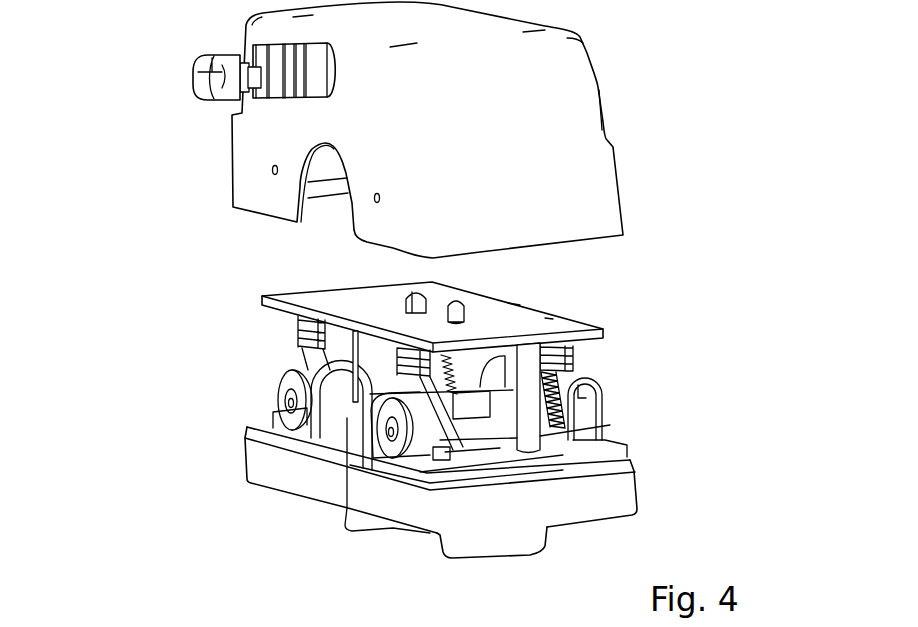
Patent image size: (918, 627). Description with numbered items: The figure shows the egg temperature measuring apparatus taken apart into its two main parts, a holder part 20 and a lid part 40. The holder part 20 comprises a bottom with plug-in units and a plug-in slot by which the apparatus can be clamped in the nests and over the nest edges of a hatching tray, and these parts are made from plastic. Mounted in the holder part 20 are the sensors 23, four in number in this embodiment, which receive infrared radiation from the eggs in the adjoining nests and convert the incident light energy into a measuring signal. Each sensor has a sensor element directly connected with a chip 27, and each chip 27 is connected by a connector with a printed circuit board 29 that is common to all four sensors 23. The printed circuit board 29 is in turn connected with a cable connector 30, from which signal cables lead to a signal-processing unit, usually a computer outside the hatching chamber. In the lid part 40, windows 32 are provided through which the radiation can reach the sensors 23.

The holder part 20 is at (201, 487).
The sensors 23 is at (280, 390).
The chip 27 is at (305, 350).
The printed circuit board 29 is at (604, 330).
The cable connector 30 is at (213, 72).
The windows 32 is at (271, 170).
The lid part 40 is at (637, 86).